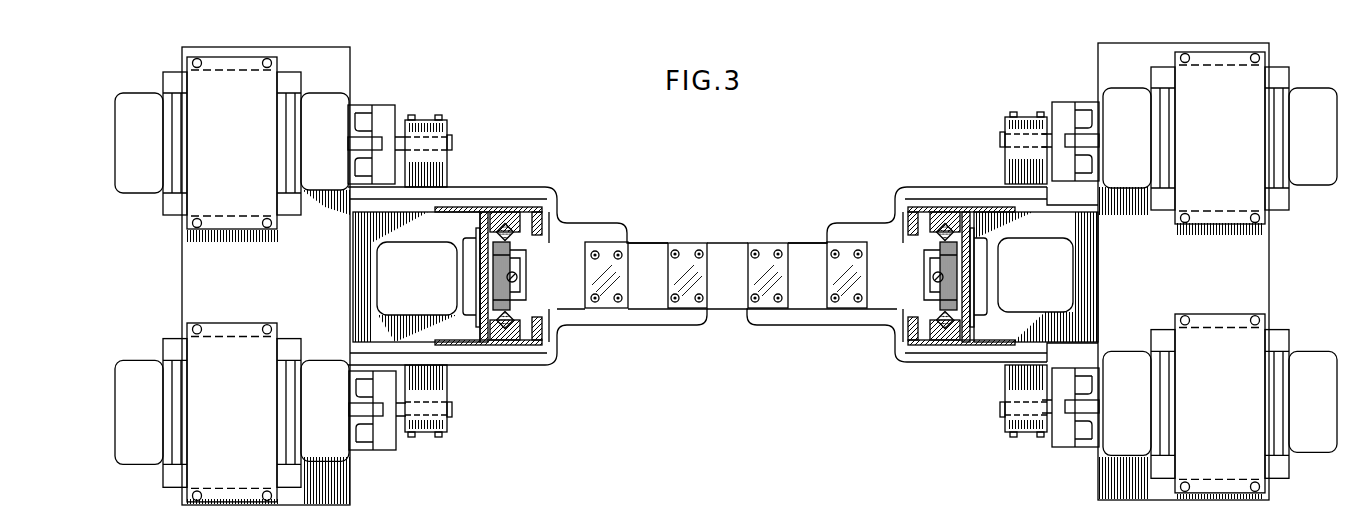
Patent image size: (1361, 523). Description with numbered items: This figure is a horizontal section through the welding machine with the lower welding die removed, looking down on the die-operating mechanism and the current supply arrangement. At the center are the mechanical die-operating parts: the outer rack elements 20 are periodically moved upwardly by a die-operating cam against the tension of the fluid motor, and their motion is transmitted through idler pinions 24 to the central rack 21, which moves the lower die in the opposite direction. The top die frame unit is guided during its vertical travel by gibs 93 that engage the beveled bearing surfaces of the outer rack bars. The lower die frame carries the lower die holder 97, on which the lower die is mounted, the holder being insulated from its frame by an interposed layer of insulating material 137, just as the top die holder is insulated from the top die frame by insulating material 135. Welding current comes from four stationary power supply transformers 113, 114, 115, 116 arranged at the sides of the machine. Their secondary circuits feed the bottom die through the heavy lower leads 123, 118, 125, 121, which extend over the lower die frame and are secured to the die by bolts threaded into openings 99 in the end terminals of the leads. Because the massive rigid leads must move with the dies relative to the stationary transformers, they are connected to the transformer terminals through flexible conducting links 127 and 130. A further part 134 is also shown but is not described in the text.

The outer rack elements 20 is at (514, 243).
The central rack 21 is at (505, 277).
The idler pinions 24 is at (517, 250).
The gibs 93 is at (500, 208).
The lower die holder 97 is at (720, 305).
The openings 99 is at (677, 252).
The power supply transformer 113 is at (157, 192).
The power supply transformer 114 is at (1317, 91).
The power supply transformer 115 is at (145, 370).
The power supply transformer 116 is at (1323, 453).
The lead 118 is at (488, 352).
The lead 121 is at (852, 326).
The lead 123 is at (597, 232).
The lead 125 is at (858, 213).
The flexible conducting link 127 is at (448, 428).
The flexible conducting link 130 is at (1004, 414).
The motor 134 is at (1004, 128).
The insulating material 135 is at (783, 240).
The insulating material 137 is at (727, 252).